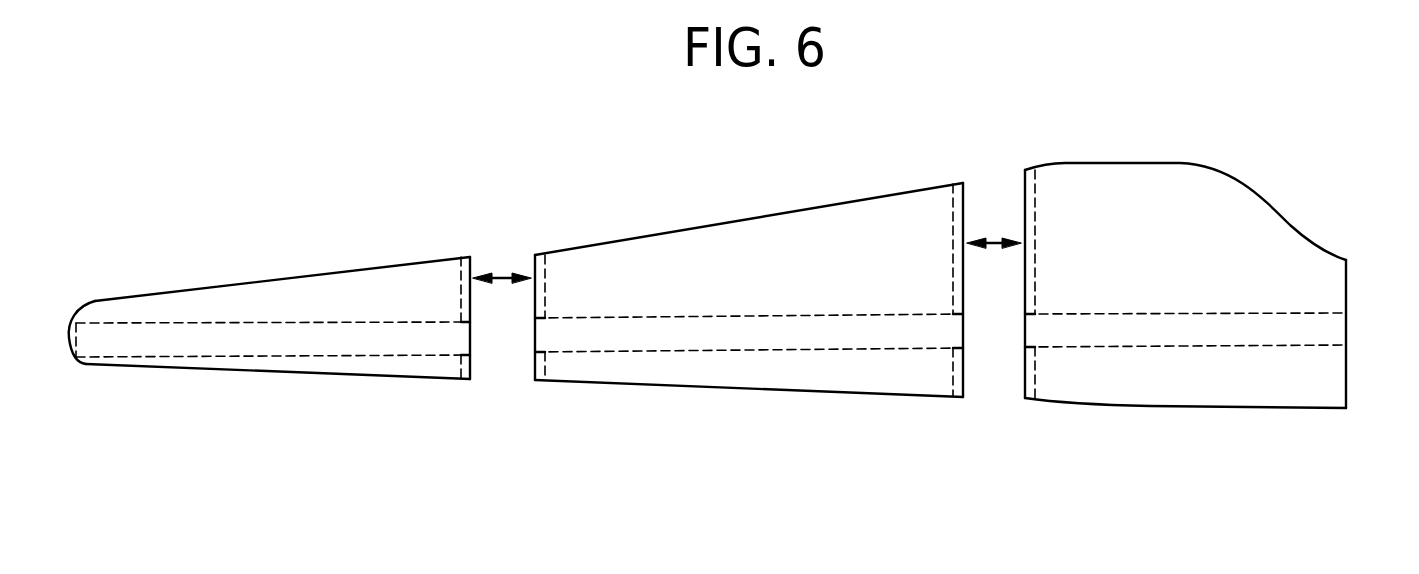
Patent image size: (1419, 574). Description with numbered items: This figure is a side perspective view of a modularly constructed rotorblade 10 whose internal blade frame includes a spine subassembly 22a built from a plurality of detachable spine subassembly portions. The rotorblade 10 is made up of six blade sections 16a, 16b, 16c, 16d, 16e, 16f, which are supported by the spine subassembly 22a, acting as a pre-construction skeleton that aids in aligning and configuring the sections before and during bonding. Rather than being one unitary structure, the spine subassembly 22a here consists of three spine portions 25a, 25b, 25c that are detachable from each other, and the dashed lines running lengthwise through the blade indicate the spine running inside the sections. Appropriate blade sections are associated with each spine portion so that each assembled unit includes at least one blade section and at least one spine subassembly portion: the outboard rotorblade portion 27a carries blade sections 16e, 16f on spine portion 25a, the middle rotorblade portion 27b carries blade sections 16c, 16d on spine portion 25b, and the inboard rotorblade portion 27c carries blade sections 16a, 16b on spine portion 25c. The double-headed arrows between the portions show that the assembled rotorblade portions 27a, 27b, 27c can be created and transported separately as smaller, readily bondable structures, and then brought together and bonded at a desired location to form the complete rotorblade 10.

The rotorblade 10 is at (1213, 137).
The blade section 16a is at (1192, 268).
The blade section 16b is at (1214, 388).
The blade section 16c is at (789, 287).
The blade section 16d is at (792, 383).
The blade section 16e is at (301, 313).
The blade section 16f is at (293, 362).
The spine subassembly 22a is at (1068, 370).
The spine subassembly portion 25a is at (326, 333).
The spine subassembly portion 25b is at (677, 332).
The spine subassembly portion 25c is at (1203, 323).
The assembled rotorblade portion 27a is at (137, 310).
The assembled rotorblade portion 27b is at (930, 183).
The assembled rotorblade portion 27c is at (1333, 252).